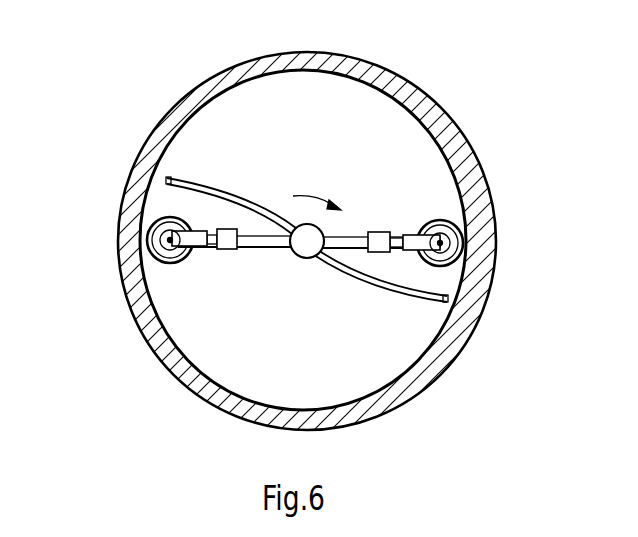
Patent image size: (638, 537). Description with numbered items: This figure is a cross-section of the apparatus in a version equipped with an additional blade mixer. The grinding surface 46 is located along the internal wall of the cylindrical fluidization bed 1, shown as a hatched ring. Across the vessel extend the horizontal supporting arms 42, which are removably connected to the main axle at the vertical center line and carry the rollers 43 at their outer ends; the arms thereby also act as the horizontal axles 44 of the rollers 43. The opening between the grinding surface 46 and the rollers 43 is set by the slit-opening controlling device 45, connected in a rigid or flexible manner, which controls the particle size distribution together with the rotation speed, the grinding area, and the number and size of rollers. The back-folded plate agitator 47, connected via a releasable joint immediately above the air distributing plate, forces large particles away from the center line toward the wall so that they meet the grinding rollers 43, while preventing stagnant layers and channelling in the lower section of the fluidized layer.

The cylindrical fluidization bed 1 is at (336, 57).
The supporting arms 42 is at (257, 248).
The rollers 43 is at (153, 224).
The horizontal axles 44 is at (165, 238).
The slit-opening controlling device 45 is at (222, 249).
The grinding surface 46 is at (345, 408).
The back-folded plate agitator 47 is at (166, 180).